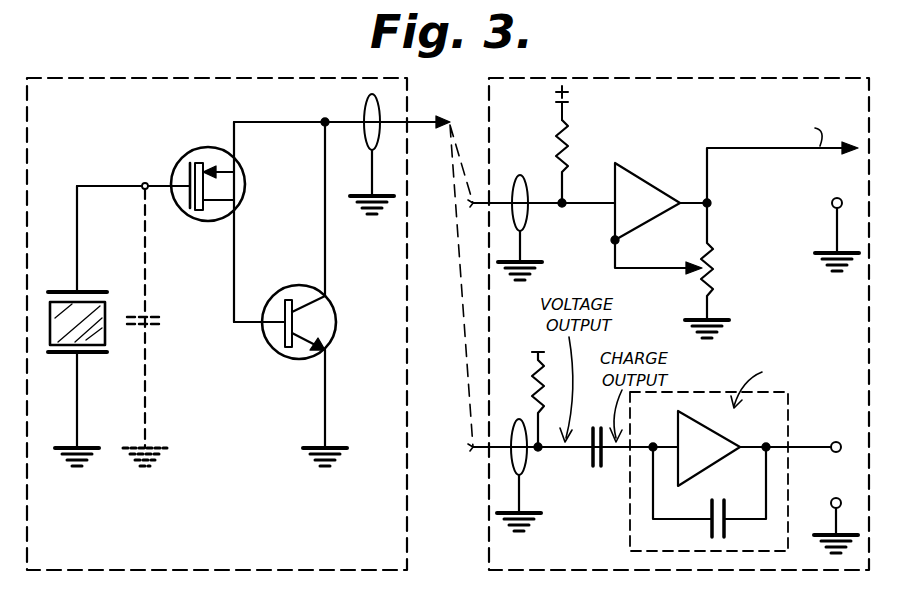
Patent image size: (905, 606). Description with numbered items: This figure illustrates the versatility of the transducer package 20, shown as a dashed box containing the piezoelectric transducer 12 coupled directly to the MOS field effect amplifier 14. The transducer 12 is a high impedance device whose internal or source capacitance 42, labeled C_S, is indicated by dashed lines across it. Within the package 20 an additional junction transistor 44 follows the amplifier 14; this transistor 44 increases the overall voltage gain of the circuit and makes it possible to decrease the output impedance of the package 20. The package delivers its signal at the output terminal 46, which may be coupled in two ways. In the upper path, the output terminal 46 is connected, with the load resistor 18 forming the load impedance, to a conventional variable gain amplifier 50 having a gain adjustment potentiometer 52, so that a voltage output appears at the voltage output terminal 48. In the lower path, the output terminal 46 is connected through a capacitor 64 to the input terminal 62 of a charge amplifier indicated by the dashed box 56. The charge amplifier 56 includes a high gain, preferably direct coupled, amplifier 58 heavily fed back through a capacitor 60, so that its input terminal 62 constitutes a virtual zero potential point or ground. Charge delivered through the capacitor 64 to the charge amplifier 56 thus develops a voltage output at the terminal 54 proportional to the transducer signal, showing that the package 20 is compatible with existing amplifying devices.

The piezoelectric transducer 12 is at (63, 300).
The amplifier 14 is at (195, 150).
The load resistor 18 is at (568, 134).
The transducer package 20 is at (196, 78).
The internal capacitance 42 is at (163, 317).
The junction transistor 44 is at (290, 357).
The output terminal 46 is at (418, 122).
The voltage output terminal 48 is at (788, 150).
The variable gain amplifier 50 is at (661, 182).
The gain adjustment potentiometer 52 is at (712, 268).
The voltage output terminal 54 is at (836, 442).
The charge amplifier 56 is at (630, 541).
The direct coupled amplifier 58 is at (680, 427).
The feedback capacitor 60 is at (712, 536).
The charge amplifier input terminal 62 is at (650, 450).
The coupling capacitor 64 is at (590, 464).